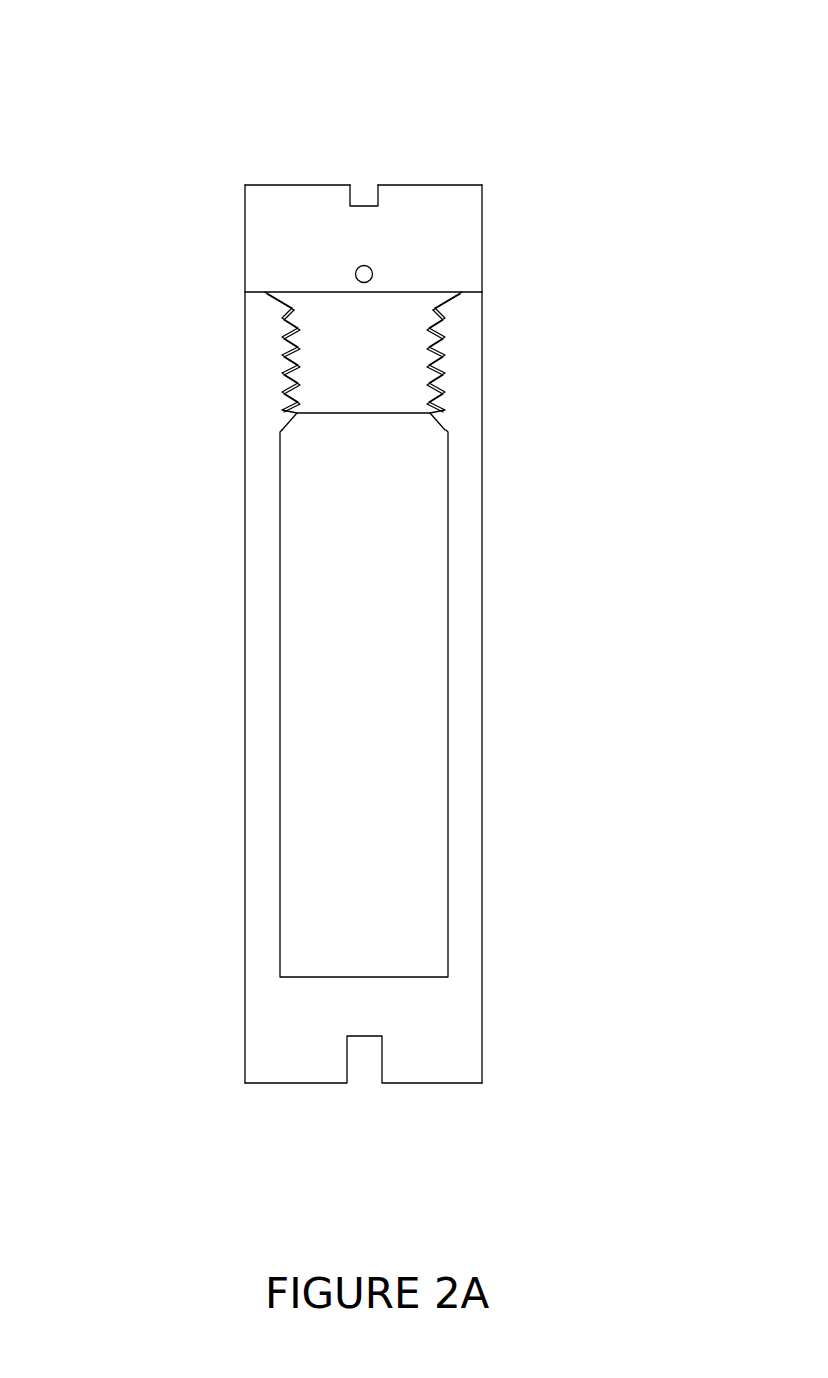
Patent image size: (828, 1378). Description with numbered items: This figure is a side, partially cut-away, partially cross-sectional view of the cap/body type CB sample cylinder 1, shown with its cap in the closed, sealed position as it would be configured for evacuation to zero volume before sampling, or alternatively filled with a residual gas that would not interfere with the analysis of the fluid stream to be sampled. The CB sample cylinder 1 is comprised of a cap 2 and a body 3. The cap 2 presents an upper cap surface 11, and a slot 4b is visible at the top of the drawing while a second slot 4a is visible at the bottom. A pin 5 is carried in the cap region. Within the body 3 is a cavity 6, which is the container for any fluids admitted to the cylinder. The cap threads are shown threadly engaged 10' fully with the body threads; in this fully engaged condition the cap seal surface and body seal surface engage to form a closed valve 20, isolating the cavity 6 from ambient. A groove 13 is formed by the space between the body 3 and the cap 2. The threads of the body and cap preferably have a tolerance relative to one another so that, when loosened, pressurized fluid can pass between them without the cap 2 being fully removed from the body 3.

The CB sample cylinder 1 is at (211, 441).
The cap 2 is at (487, 217).
The body 3 is at (240, 744).
The slot 4a is at (368, 1073).
The slot 4b is at (363, 195).
The pin 5 is at (357, 263).
The cavity 6 is at (299, 661).
The threads engaged 10' is at (480, 404).
The upper cap surface 11 is at (467, 170).
The groove between cap and body 13 is at (242, 292).
The valve 20 is at (463, 305).